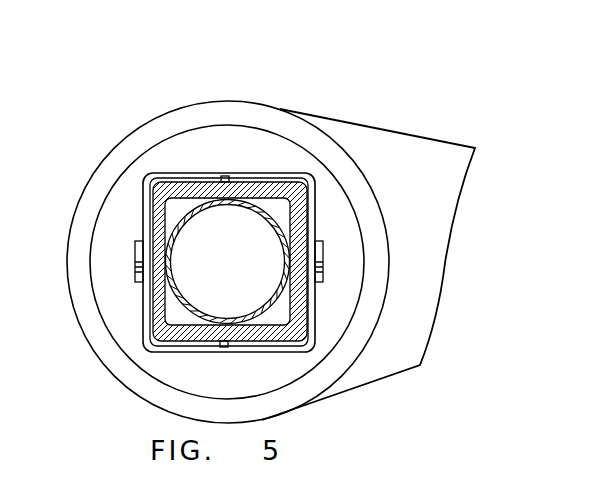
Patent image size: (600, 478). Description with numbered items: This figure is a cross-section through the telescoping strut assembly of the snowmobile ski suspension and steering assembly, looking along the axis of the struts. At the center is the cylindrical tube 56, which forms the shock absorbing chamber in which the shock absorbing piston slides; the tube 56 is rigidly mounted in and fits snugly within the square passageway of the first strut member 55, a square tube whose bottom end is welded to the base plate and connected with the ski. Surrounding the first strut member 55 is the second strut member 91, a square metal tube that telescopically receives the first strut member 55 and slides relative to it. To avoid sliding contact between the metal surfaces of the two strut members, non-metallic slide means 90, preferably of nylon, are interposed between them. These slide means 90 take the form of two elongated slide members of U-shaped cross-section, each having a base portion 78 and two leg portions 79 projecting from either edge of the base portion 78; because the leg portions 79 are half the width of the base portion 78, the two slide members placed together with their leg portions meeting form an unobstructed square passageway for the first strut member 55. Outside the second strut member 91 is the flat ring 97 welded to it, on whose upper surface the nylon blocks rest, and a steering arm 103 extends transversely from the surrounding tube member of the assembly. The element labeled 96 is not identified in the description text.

The first strut member 55 is at (200, 188).
The cylindrical tube 56 is at (272, 212).
The base portion 78 is at (155, 225).
The leg portions 79 is at (208, 340).
The slide means 90 is at (214, 183).
The second strut member 91 is at (260, 176).
The side tab 96 is at (322, 265).
The flat ring 97 is at (128, 186).
The steering arm 103 is at (403, 288).